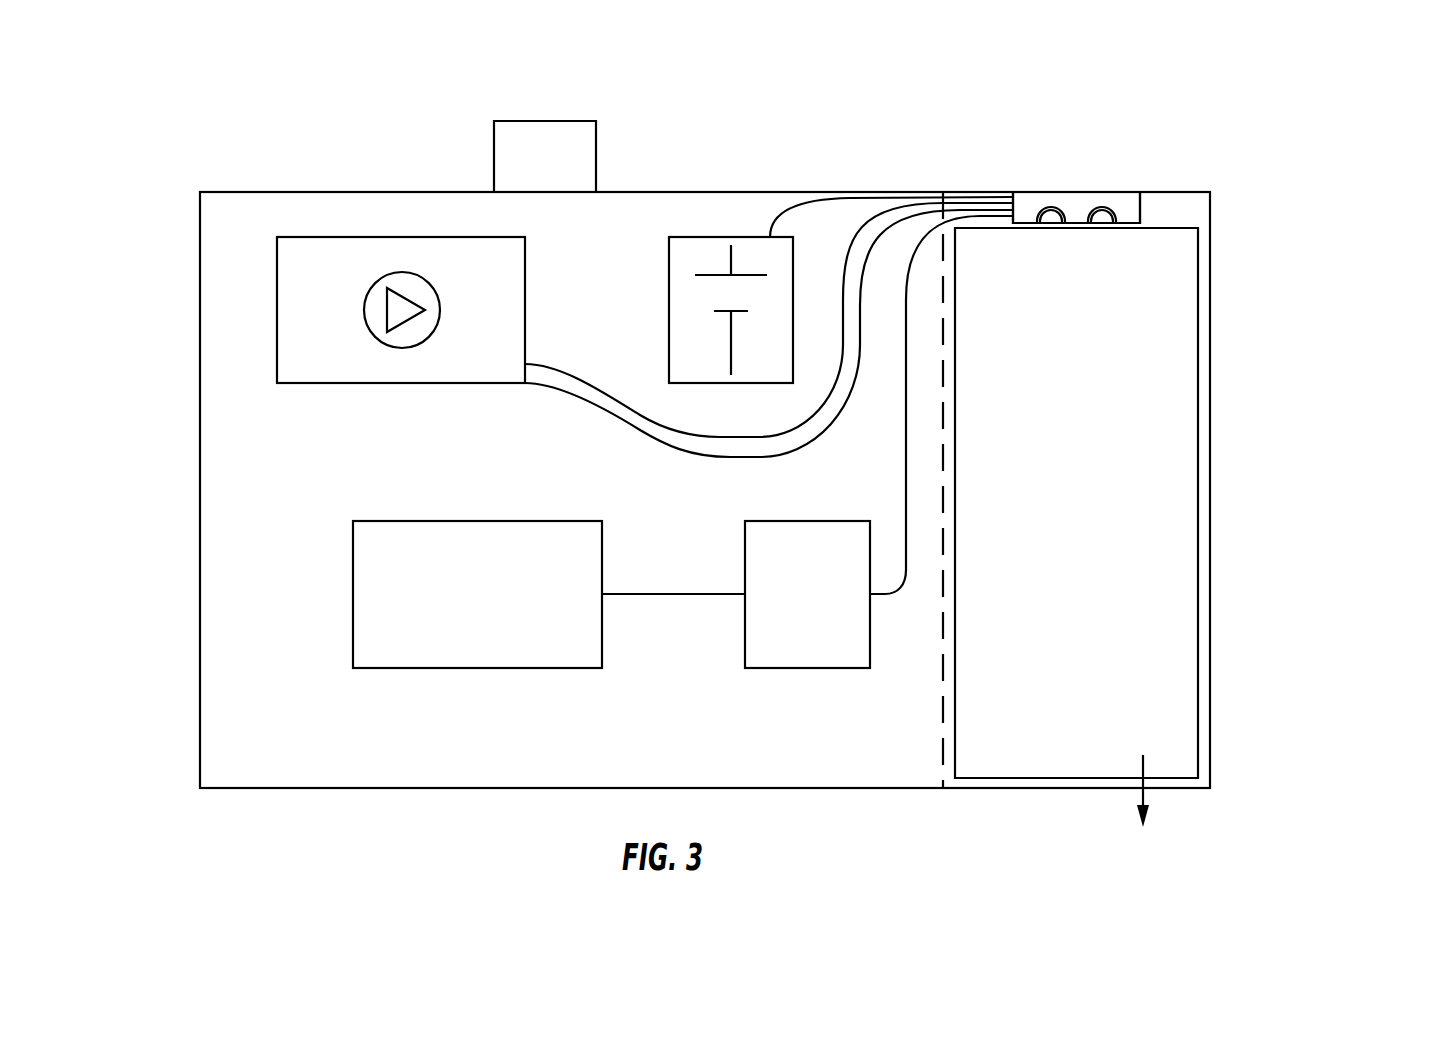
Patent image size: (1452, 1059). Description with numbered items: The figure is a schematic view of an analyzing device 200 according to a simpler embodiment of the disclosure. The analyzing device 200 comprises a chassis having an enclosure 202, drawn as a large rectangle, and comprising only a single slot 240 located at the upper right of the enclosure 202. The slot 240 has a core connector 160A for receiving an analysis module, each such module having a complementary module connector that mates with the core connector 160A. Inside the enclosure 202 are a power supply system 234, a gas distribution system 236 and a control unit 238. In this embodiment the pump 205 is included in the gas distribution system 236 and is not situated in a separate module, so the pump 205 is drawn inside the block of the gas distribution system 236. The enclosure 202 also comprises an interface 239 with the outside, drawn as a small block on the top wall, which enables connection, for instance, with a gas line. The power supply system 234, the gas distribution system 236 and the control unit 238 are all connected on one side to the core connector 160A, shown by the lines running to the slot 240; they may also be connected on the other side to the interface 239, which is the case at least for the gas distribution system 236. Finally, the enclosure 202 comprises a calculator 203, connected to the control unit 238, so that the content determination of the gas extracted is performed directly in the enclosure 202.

The analyzing device 200 is at (142, 153).
The enclosure 202 is at (200, 272).
The calculator 203 is at (497, 616).
The pump 205 is at (402, 272).
The power supply system 234 is at (707, 237).
The gas distribution system 236 is at (277, 362).
The control unit 238 is at (830, 616).
The interface 239 is at (545, 135).
The slot 240 is at (1018, 142).
The core connector 160A is at (1118, 200).